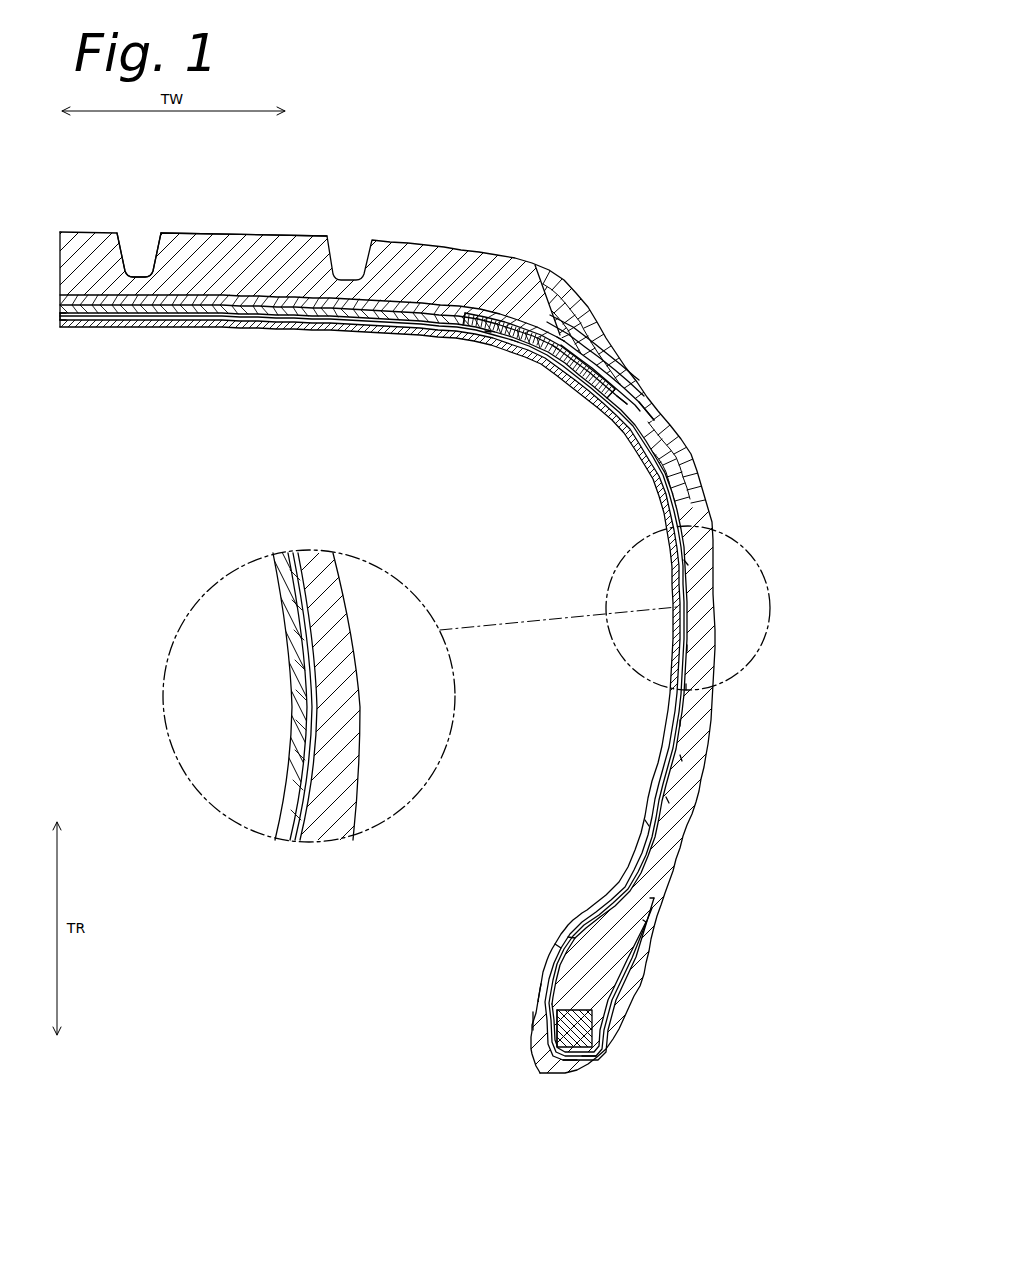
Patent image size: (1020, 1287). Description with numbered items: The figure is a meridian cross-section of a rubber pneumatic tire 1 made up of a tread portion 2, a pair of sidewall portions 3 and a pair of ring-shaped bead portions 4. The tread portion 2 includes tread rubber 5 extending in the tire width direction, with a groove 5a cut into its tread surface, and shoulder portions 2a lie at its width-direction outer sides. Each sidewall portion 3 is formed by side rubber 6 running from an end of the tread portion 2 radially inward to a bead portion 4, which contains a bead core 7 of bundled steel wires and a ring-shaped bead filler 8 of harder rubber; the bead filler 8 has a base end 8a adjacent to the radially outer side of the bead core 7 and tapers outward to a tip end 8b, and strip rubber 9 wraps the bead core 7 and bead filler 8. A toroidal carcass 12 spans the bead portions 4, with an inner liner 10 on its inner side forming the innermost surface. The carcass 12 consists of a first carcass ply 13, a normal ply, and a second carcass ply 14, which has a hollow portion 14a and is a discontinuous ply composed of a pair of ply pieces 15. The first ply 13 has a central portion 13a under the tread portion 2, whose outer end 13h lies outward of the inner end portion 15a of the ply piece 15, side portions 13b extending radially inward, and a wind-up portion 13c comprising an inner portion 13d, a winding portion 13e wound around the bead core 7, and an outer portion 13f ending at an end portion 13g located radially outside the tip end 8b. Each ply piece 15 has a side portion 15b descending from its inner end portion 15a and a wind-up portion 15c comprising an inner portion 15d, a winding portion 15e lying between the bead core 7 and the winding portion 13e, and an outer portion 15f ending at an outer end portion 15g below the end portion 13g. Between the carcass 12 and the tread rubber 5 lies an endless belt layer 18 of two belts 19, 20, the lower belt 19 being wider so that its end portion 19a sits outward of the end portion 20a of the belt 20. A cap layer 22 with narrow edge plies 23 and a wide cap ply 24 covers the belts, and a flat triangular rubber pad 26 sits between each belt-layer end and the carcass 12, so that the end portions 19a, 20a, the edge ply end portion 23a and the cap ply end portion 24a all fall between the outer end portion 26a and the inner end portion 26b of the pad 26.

The pneumatic tire 1 is at (692, 142).
The tread portion 2 is at (216, 228).
The shoulder portion 2a is at (517, 283).
The sidewall portion 3 is at (716, 712).
The bead portion 4 is at (732, 993).
The tread rubber 5 is at (262, 250).
The groove 5a is at (137, 262).
The side rubber 6 is at (714, 672).
The bead core 7 is at (594, 1030).
The bead filler 8 is at (604, 967).
The base end 8a is at (540, 1033).
The tip end 8b is at (641, 828).
The strip rubber 9 is at (537, 1050).
The inner liner 10 is at (190, 323).
The carcass 12 is at (506, 490).
The first carcass ply 13 is at (655, 497).
The central portion 13a is at (100, 322).
The side portion 13b is at (667, 722).
The wind-up portion 13c is at (688, 758).
The inner portion 13d is at (552, 962).
The winding portion 13e is at (568, 1058).
The outer portion 13f is at (647, 927).
The end portion 13g is at (688, 562).
The outer end 13h is at (517, 345).
The second carcass ply 14 is at (647, 408).
The hollow portion 14a is at (88, 312).
The ply piece 15 is at (373, 658).
The inner end portion 15a is at (490, 340).
The side portion 15b is at (672, 686).
The wind-up portion 15c is at (674, 802).
The inner portion 15d is at (563, 935).
The winding portion 15e is at (587, 1058).
The outer portion 15f is at (647, 900).
The outer end portion 15g is at (716, 647).
The belt layer 18 is at (214, 405).
The belt 19 is at (237, 302).
The end portion 19a is at (570, 338).
The belt 20 is at (275, 310).
The end portion 20a is at (540, 300).
The cap layer 22 is at (537, 172).
The edge ply 23 is at (505, 310).
The end portion 23a is at (600, 366).
The cap ply 24 is at (462, 305).
The end portion 24a is at (595, 355).
The pad 26 is at (565, 323).
The end portion 26a is at (600, 395).
The end portion 26b is at (413, 340).